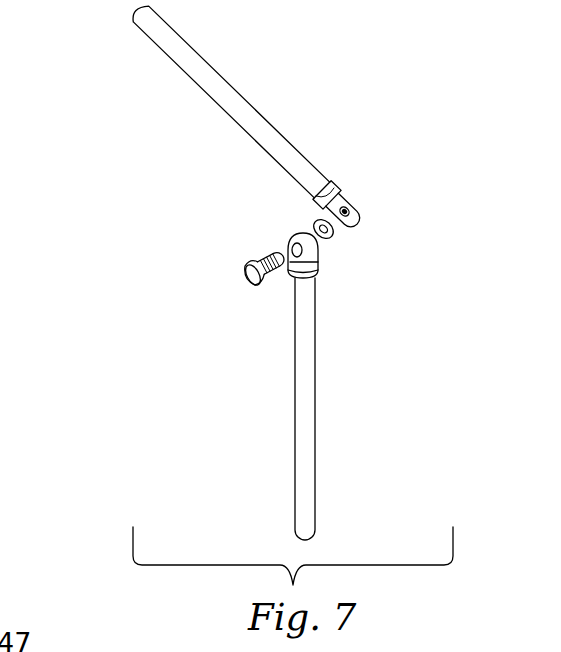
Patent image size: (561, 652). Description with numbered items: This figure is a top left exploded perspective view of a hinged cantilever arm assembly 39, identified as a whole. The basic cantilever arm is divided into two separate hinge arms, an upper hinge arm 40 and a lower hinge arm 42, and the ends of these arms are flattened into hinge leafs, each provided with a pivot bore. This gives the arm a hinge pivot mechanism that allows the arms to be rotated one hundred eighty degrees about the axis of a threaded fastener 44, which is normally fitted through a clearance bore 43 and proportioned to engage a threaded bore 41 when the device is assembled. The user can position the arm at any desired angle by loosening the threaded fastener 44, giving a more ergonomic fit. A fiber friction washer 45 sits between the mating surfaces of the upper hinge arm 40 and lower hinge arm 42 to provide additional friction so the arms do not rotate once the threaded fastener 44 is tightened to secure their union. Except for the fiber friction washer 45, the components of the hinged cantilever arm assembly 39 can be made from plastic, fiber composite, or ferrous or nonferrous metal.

The hinged cantilever arm assembly 39 is at (114, 276).
The upper hinge arm 40 is at (243, 120).
The threaded bore 41 is at (346, 222).
The lower hinge arm 42 is at (305, 402).
The clearance bore 43 is at (318, 278).
The threaded fastener 44 is at (246, 270).
The fiber friction washer 45 is at (318, 223).